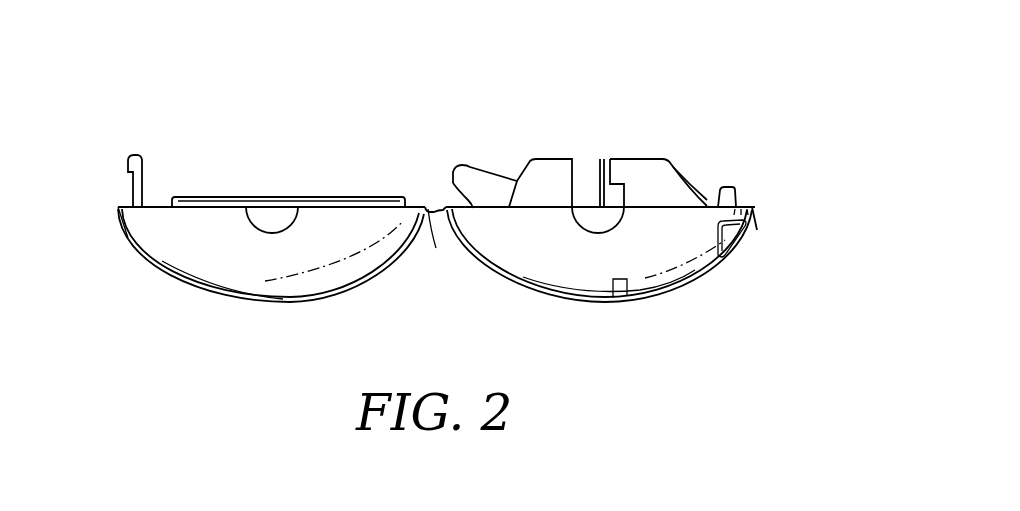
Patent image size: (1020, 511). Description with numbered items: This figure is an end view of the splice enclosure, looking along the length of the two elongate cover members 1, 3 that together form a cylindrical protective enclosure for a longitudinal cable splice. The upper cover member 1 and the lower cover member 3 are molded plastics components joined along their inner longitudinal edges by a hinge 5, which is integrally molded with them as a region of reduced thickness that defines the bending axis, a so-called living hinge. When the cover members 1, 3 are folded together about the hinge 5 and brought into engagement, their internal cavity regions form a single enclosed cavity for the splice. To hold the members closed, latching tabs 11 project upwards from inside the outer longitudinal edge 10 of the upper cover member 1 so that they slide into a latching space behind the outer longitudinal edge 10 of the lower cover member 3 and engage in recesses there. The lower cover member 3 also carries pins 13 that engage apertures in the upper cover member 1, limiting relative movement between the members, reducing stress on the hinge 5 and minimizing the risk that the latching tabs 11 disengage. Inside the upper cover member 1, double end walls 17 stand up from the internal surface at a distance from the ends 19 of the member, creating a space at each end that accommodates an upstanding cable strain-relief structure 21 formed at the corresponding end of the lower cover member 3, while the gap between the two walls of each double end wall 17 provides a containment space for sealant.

The upper cover member 1 is at (182, 314).
The lower cover member 3 is at (666, 319).
The hinge 5 is at (433, 214).
The outer longitudinal edge 10 is at (121, 208).
The latching tabs 11 is at (145, 168).
The pins 13 is at (725, 188).
The double end walls 17 is at (273, 213).
The ends 19 is at (283, 262).
The cable strain-relief structure 21 is at (651, 170).